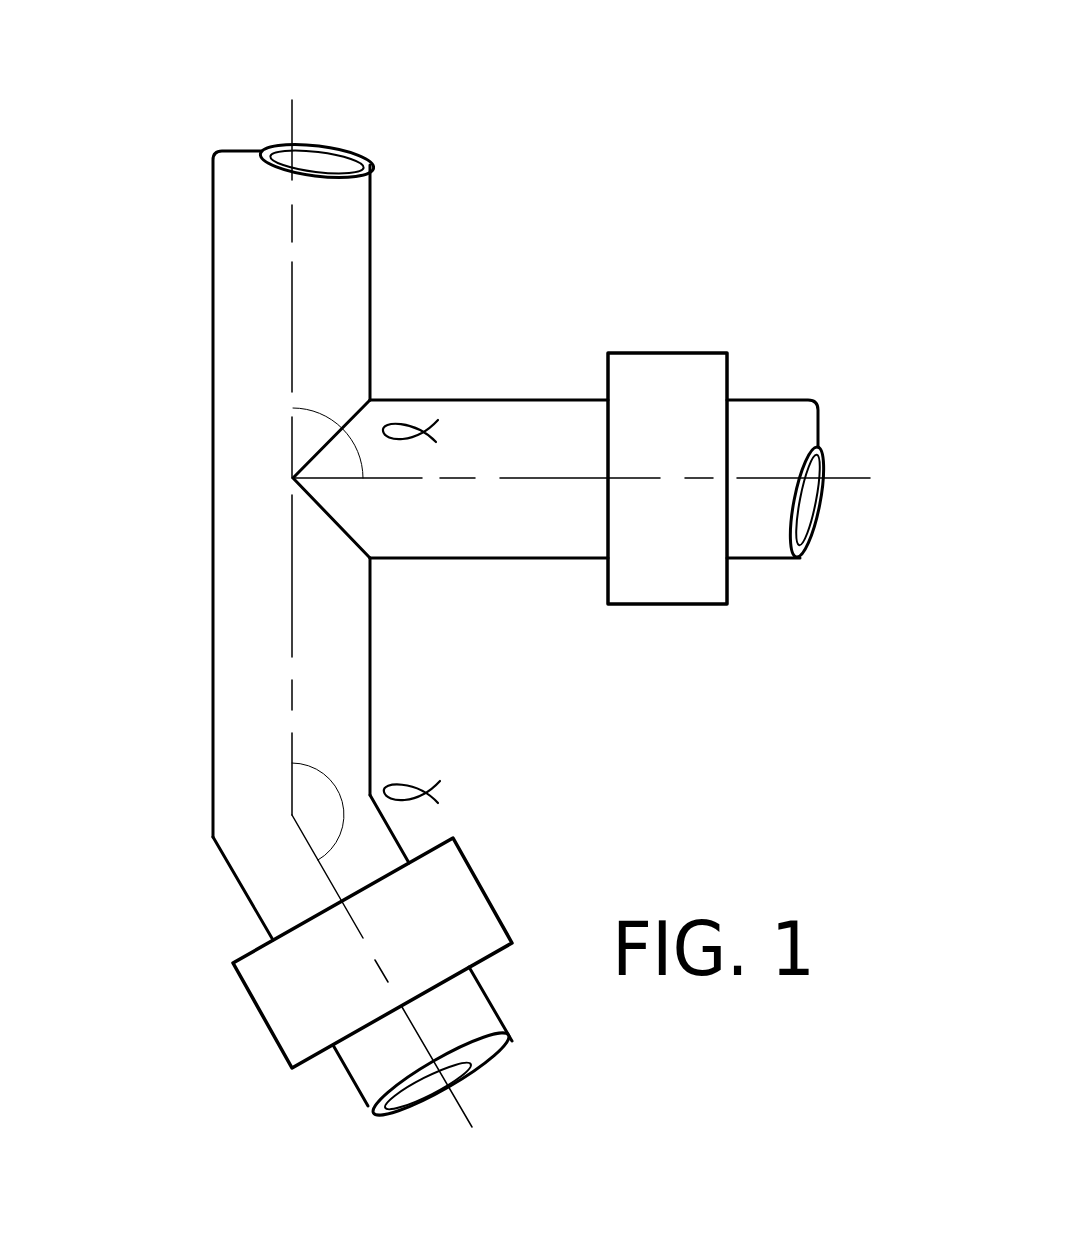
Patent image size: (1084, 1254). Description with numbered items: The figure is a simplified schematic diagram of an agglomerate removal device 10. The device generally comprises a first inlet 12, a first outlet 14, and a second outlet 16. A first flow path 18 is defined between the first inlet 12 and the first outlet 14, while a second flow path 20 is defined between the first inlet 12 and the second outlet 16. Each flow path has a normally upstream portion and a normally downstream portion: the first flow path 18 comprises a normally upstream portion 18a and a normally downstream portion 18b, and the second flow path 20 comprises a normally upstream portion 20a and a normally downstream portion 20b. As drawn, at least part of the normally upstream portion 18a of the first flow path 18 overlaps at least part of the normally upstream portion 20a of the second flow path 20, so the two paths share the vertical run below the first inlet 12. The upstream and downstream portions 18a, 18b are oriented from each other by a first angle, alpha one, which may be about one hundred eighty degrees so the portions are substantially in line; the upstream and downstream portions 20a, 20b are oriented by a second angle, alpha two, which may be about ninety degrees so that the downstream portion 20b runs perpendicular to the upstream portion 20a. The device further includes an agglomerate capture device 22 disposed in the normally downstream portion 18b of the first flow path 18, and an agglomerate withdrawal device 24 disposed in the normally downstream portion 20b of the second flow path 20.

The agglomerate removal device 10 is at (722, 238).
The first inlet 12 is at (330, 163).
The first outlet 14 is at (450, 1082).
The second outlet 16 is at (808, 523).
The first flow path 18 is at (252, 602).
The normally upstream portion of first flow path 18a is at (290, 282).
The normally downstream portion of first flow path 18b is at (320, 885).
The second flow path 20 is at (525, 402).
The normally upstream portion of second flow path 20a is at (474, 388).
The normally downstream portion of second flow path 20b is at (537, 487).
The agglomerate capture device 22 is at (458, 895).
The agglomerate withdrawal device 24 is at (680, 587).